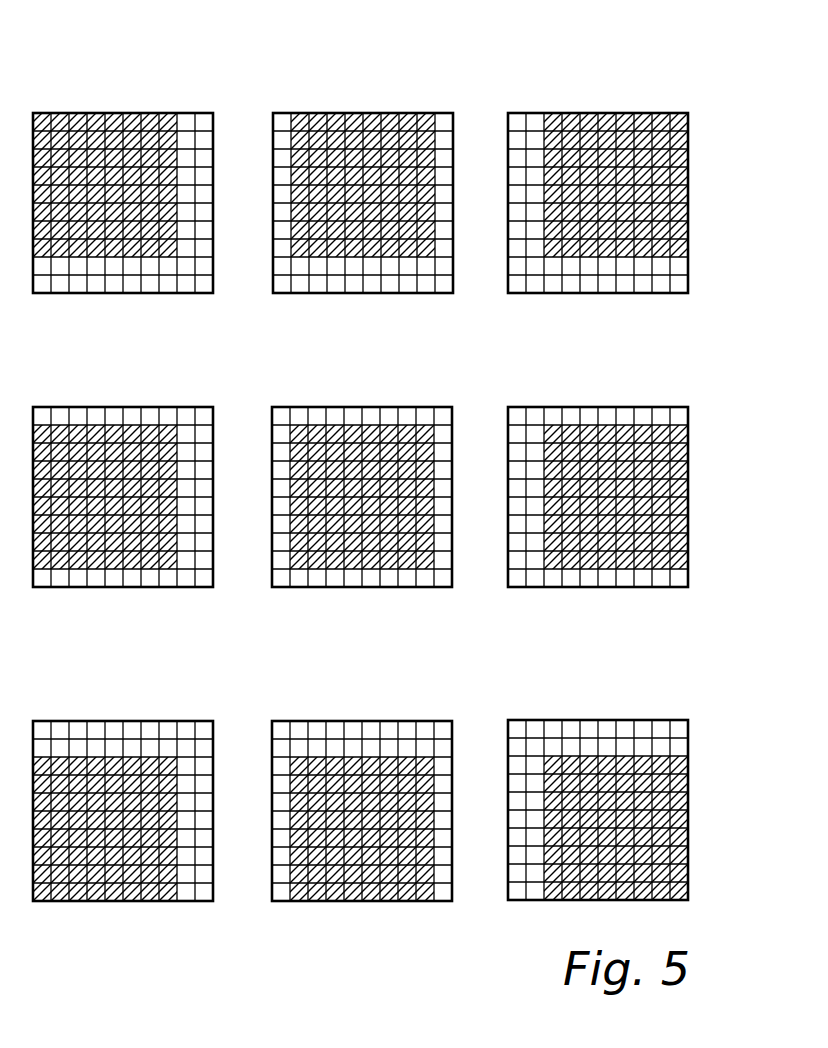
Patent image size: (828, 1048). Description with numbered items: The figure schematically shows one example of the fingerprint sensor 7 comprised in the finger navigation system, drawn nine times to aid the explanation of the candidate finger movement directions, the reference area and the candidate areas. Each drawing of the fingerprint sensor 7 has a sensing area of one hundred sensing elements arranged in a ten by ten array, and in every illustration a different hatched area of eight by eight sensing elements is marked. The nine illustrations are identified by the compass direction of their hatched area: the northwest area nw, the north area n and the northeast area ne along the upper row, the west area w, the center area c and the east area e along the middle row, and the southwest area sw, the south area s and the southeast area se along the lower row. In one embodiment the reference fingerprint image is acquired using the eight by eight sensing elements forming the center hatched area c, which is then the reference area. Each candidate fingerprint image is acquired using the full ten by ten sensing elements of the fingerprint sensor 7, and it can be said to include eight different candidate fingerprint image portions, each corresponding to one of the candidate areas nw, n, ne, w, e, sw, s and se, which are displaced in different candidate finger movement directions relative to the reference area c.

The fingerprint sensor 7 is at (370, 458).
The northwest hatched area nw is at (123, 183).
The north hatched area n is at (363, 183).
The northeast hatched area ne is at (598, 183).
The west hatched area w is at (123, 478).
The center hatched area c is at (362, 478).
The east hatched area e is at (598, 478).
The southwest hatched area sw is at (123, 792).
The south hatched area s is at (362, 792).
The southeast hatched area se is at (598, 791).